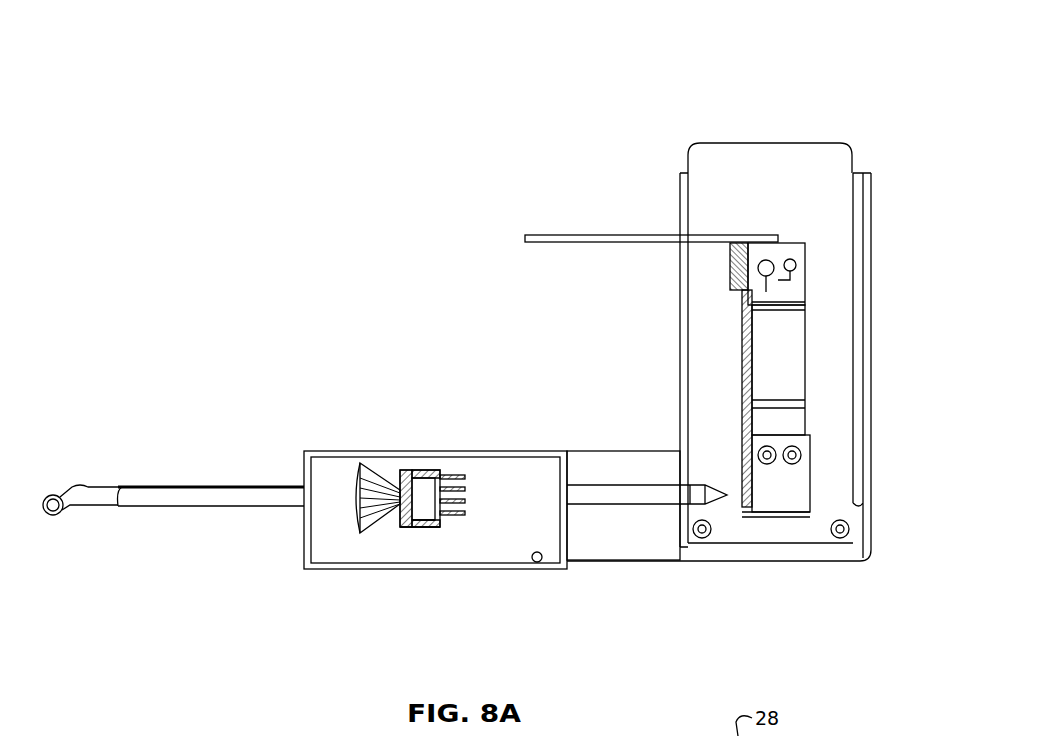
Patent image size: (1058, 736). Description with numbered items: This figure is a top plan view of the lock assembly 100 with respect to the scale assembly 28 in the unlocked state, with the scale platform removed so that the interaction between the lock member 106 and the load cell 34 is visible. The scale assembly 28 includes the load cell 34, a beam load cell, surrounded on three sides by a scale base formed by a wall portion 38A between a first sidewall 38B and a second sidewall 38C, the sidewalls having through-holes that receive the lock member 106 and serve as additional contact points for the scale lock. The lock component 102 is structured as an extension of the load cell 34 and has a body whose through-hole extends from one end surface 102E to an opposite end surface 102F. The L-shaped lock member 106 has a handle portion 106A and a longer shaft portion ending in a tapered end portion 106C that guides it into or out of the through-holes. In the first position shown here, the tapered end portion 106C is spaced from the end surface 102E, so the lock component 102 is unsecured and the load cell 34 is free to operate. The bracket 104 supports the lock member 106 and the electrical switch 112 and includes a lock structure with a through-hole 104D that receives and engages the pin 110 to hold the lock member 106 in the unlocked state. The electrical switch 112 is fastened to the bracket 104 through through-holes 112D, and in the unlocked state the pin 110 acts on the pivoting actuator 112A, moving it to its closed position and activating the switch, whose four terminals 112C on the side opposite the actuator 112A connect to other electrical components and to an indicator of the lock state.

The scale assembly 28 is at (770, 120).
The wall portion 38A is at (810, 198).
The first sidewall 38B is at (689, 498).
The second sidewall 38C is at (870, 505).
The load cell 34 is at (785, 367).
The lock assembly 100 is at (388, 347).
The lock component 102 is at (783, 490).
The end surface 102E is at (778, 490).
The opposite end surface 102F is at (808, 490).
The bracket 104 is at (330, 540).
The through-hole 104D is at (368, 518).
The lock member 106 is at (240, 497).
The handle portion 106A is at (85, 495).
The tapered end portion 106C is at (717, 505).
The pin 110 is at (398, 490).
The electrical switch 112 is at (432, 500).
The actuator 112A is at (402, 487).
The terminals 112C is at (462, 480).
The through-holes 112D is at (412, 530).